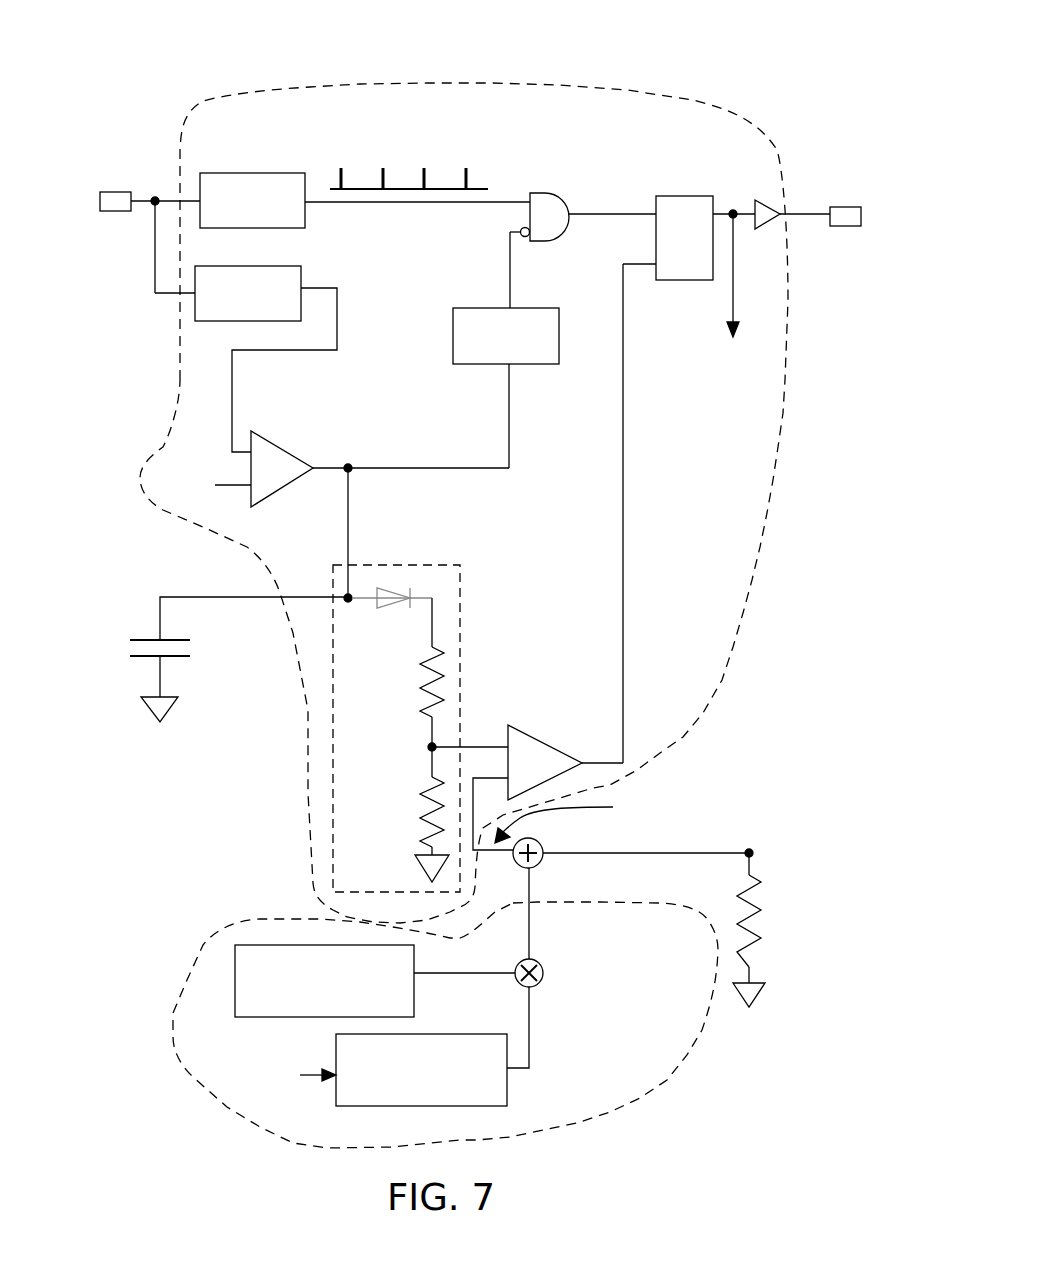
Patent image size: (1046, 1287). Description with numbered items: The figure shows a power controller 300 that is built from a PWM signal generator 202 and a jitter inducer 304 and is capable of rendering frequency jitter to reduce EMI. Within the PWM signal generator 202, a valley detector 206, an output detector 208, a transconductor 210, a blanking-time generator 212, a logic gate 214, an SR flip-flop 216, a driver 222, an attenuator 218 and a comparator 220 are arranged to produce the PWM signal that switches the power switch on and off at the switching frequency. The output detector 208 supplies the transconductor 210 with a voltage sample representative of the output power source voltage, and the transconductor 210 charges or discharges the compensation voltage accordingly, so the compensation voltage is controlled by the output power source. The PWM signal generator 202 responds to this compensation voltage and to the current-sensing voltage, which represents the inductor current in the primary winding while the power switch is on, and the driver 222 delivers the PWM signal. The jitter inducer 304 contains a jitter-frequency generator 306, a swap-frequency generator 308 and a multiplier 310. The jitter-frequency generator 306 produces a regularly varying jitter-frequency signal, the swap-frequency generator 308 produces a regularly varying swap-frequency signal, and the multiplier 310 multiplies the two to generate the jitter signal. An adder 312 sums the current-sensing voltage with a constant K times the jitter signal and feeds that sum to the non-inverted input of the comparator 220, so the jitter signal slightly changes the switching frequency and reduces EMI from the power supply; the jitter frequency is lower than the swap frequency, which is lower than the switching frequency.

The power controller 300 is at (519, 62).
The PWM signal generator 202 is at (312, 88).
The valley detector 206 is at (296, 224).
The output detector 208 is at (300, 317).
The transconductor 210 is at (262, 438).
The blanking-time generator 212 is at (556, 360).
The logic gate 214 is at (545, 193).
The SR flip-flop 216 is at (709, 254).
The attenuator 218 is at (442, 565).
The comparator 220 is at (527, 733).
The driver 222 is at (763, 198).
The jitter inducer 304 is at (192, 965).
The jitter-frequency generator 306 is at (235, 983).
The swap-frequency generator 308 is at (336, 1080).
The multiplier 310 is at (545, 964).
The adder 312 is at (543, 860).